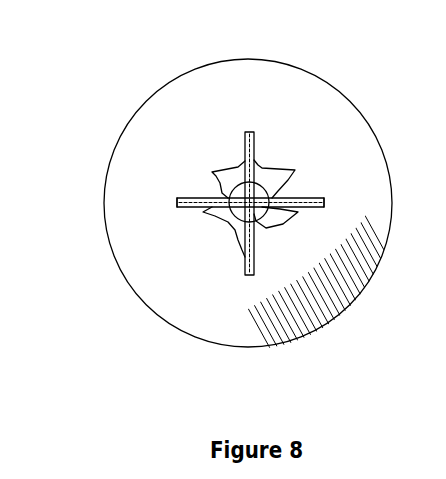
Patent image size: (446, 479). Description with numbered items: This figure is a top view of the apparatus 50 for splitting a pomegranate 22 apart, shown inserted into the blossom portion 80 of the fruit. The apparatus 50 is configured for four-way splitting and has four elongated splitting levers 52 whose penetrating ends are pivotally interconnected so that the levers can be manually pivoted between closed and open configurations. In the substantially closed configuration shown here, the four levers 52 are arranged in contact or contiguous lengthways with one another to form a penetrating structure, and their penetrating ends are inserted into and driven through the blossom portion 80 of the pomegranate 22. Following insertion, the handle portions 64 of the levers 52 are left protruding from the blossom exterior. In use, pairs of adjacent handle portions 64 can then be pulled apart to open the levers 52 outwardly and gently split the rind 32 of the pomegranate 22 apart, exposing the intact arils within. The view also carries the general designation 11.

The device 11 is at (188, 240).
The pomegranate 22 is at (103, 201).
The rind 32 is at (190, 88).
The apparatus 50 is at (299, 141).
The splitting levers 52 is at (253, 145).
The handle portions 64 is at (178, 197).
The blossom portion 80 is at (178, 221).